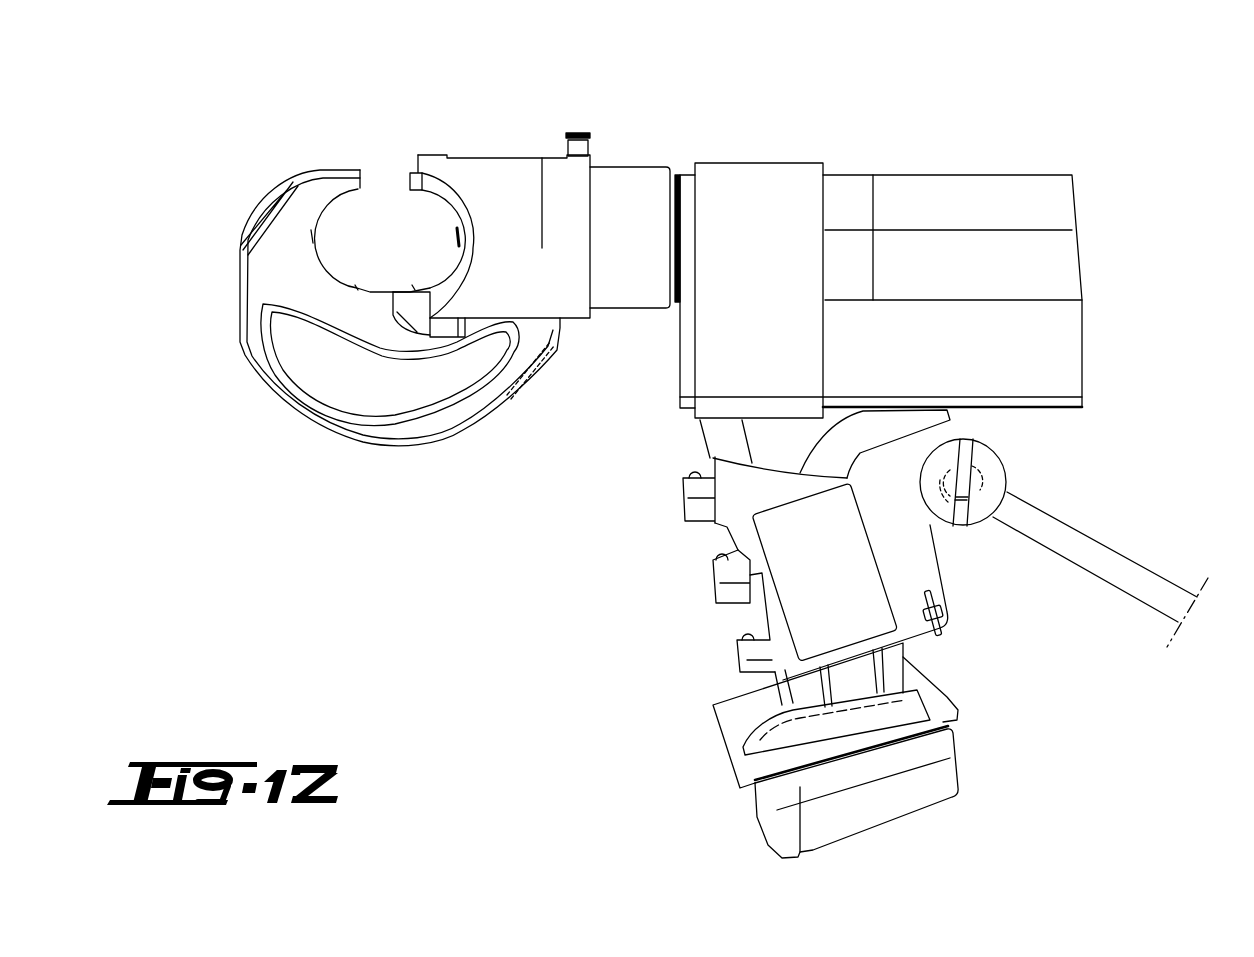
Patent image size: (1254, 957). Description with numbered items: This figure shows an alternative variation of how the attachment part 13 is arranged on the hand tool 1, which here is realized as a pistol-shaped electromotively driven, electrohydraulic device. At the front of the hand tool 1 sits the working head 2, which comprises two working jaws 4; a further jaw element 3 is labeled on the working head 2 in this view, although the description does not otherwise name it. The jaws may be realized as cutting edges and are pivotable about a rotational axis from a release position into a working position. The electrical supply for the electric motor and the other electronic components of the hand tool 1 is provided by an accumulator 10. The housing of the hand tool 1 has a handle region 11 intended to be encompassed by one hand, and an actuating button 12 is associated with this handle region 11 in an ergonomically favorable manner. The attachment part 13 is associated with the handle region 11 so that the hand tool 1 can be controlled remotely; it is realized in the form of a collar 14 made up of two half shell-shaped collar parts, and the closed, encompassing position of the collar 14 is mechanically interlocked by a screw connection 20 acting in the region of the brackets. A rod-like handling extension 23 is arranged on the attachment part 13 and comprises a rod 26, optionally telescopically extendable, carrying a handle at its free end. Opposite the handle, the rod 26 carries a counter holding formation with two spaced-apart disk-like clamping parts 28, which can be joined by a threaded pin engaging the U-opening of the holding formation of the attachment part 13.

The hand tool 1 is at (1072, 133).
The working head 2 is at (292, 155).
The movable jaw 3 is at (305, 212).
The working jaws 4 is at (447, 196).
The accumulator 10 is at (833, 817).
The handle region 11 is at (797, 541).
The actuating button 12 is at (730, 487).
The attachment part 13 is at (714, 624).
The collar 14 is at (887, 557).
The screw connection 20 is at (947, 615).
The handling extension 23 is at (1113, 555).
The rod 26 is at (1127, 572).
The disk-like clamping parts 28 is at (990, 468).